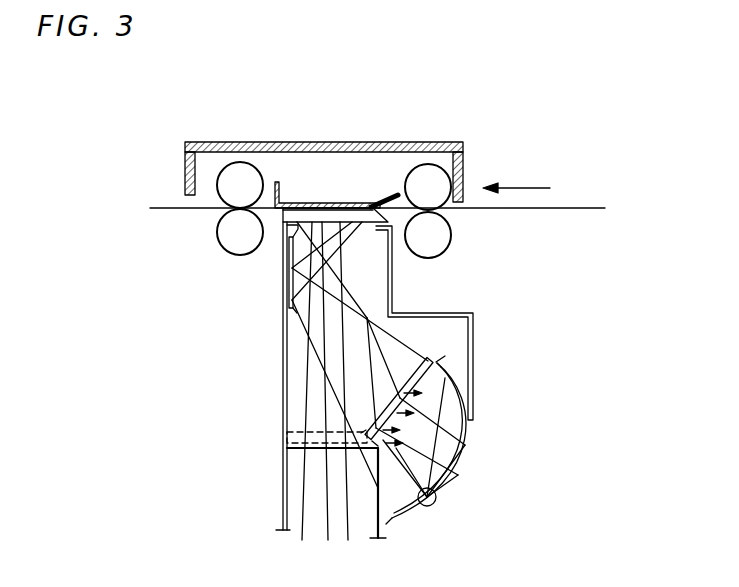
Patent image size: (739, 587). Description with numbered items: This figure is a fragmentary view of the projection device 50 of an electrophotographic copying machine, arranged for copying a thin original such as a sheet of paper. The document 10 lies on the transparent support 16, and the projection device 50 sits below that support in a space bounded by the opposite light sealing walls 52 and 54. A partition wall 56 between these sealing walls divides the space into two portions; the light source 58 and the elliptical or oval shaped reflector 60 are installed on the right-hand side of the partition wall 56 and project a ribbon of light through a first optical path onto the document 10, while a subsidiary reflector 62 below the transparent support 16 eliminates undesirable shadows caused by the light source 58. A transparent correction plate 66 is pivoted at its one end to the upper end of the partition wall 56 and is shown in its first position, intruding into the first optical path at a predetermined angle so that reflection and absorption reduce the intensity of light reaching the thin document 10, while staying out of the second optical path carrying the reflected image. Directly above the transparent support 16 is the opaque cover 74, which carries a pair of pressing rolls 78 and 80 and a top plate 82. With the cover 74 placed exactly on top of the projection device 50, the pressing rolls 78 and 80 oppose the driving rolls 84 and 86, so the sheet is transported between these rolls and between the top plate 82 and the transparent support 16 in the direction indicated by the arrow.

The document 10 is at (590, 208).
The transparent support 16 is at (303, 216).
The projection device 50 is at (418, 528).
The light sealing wall 52 is at (283, 392).
The light sealing wall 54 is at (477, 315).
The partition wall 56 is at (376, 530).
The light source 58 is at (436, 497).
The reflector 60 is at (470, 452).
The subsidiary reflector 62 is at (292, 314).
The transparent correction plate 66 is at (433, 360).
The opaque cover 74 is at (394, 142).
The pressing roll 78 is at (237, 173).
The pressing roll 80 is at (430, 175).
The top plate 82 is at (361, 205).
The driving roll 84 is at (225, 243).
The driving roll 86 is at (445, 238).